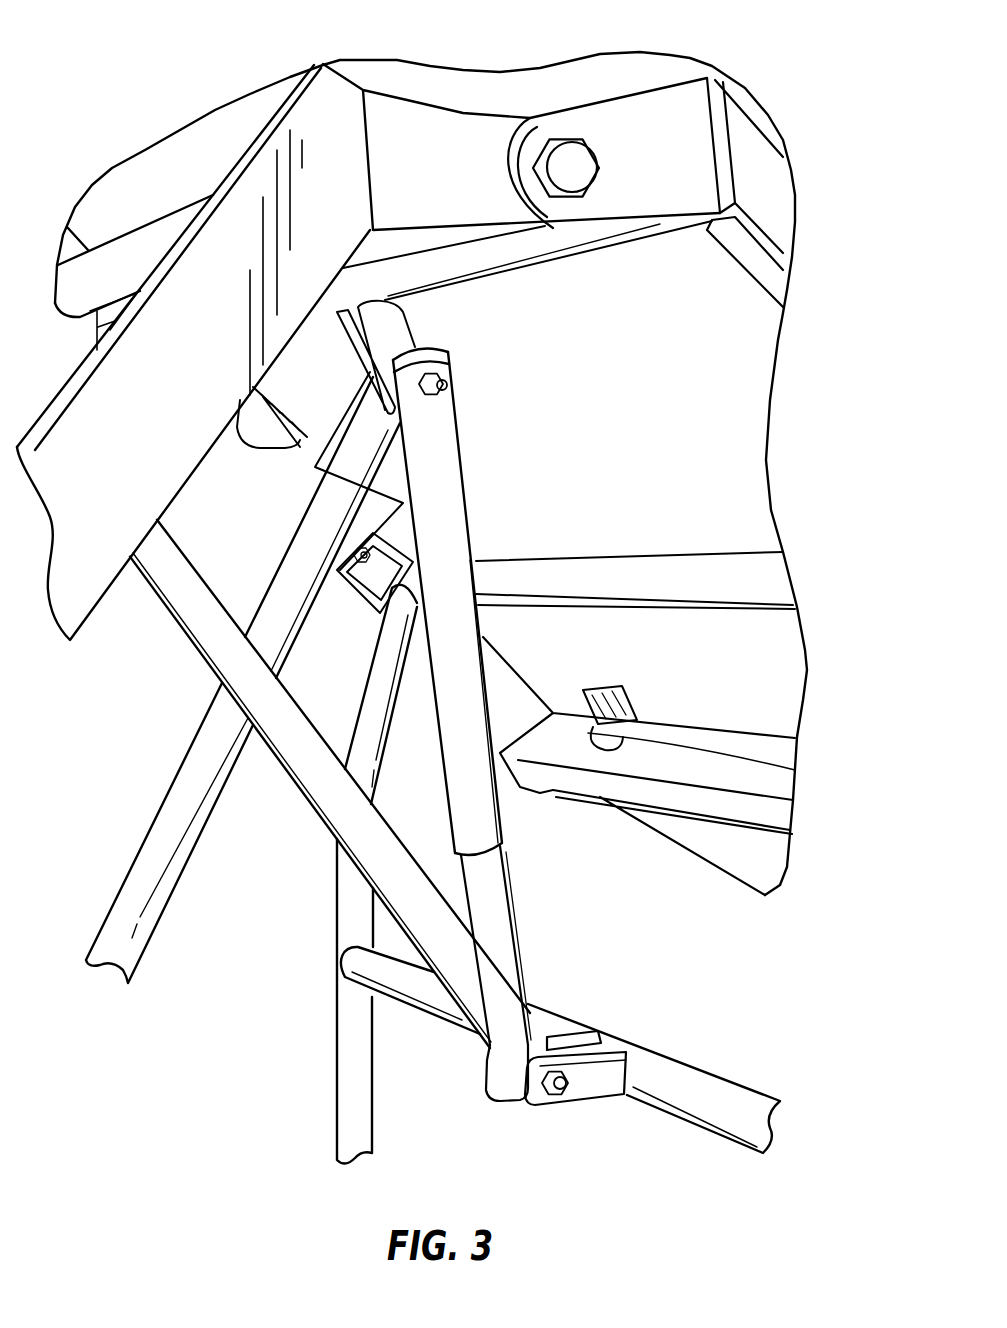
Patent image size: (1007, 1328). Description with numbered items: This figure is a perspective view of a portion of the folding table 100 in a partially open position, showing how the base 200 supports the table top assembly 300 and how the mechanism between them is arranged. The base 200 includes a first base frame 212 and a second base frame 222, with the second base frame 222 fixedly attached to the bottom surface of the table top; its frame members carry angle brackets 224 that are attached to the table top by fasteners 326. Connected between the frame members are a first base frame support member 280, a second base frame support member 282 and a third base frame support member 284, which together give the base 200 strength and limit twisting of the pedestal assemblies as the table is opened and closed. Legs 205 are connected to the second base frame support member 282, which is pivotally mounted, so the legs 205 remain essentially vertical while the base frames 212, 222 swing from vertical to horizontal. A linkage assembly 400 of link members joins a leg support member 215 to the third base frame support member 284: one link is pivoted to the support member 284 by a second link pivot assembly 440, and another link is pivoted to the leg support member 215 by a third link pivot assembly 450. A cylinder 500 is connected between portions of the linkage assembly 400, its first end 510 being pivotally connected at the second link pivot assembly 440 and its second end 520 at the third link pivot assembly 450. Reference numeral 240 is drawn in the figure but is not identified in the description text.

The folding table 100 is at (782, 87).
The base 200 is at (743, 1087).
The legs 205 is at (344, 1050).
The first base frame 212 is at (259, 185).
The leg support member 215 is at (554, 1023).
The second base frame 222 is at (744, 148).
The angle brackets 224 is at (616, 692).
The pivot bolt 240 is at (572, 160).
The first base frame support member 280 is at (760, 812).
The second base frame support member 282 is at (650, 572).
The third base frame support member 284 is at (571, 237).
The table top assembly 300 is at (709, 726).
The fasteners 326 is at (793, 773).
The linkage assembly 400 is at (197, 671).
The second link pivot assembly 440 is at (452, 388).
The third link pivot assembly 450 is at (567, 1072).
The cylinder 500 is at (498, 923).
The first end of the cylinder 510 is at (447, 458).
The second end of the cylinder 520 is at (484, 1083).